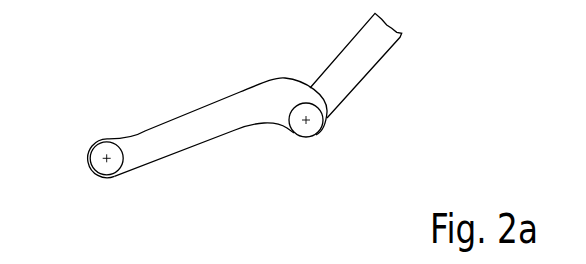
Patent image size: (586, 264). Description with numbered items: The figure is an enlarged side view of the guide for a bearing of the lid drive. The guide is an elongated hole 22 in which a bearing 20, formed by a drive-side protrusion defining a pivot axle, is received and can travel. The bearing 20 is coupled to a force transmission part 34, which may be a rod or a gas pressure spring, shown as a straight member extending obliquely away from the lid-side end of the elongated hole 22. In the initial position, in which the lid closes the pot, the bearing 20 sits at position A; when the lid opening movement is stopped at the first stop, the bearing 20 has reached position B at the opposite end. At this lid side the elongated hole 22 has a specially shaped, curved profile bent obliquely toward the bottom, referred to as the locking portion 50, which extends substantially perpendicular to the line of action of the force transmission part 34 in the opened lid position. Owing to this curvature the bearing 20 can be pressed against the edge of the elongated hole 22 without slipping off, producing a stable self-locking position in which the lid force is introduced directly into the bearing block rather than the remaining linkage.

The elongated hole 22 is at (205, 118).
The bearing 20 is at (102, 170).
The force transmission part 34 is at (360, 68).
The locking portion 50 is at (286, 134).
The position A is at (88, 162).
The position B is at (320, 132).